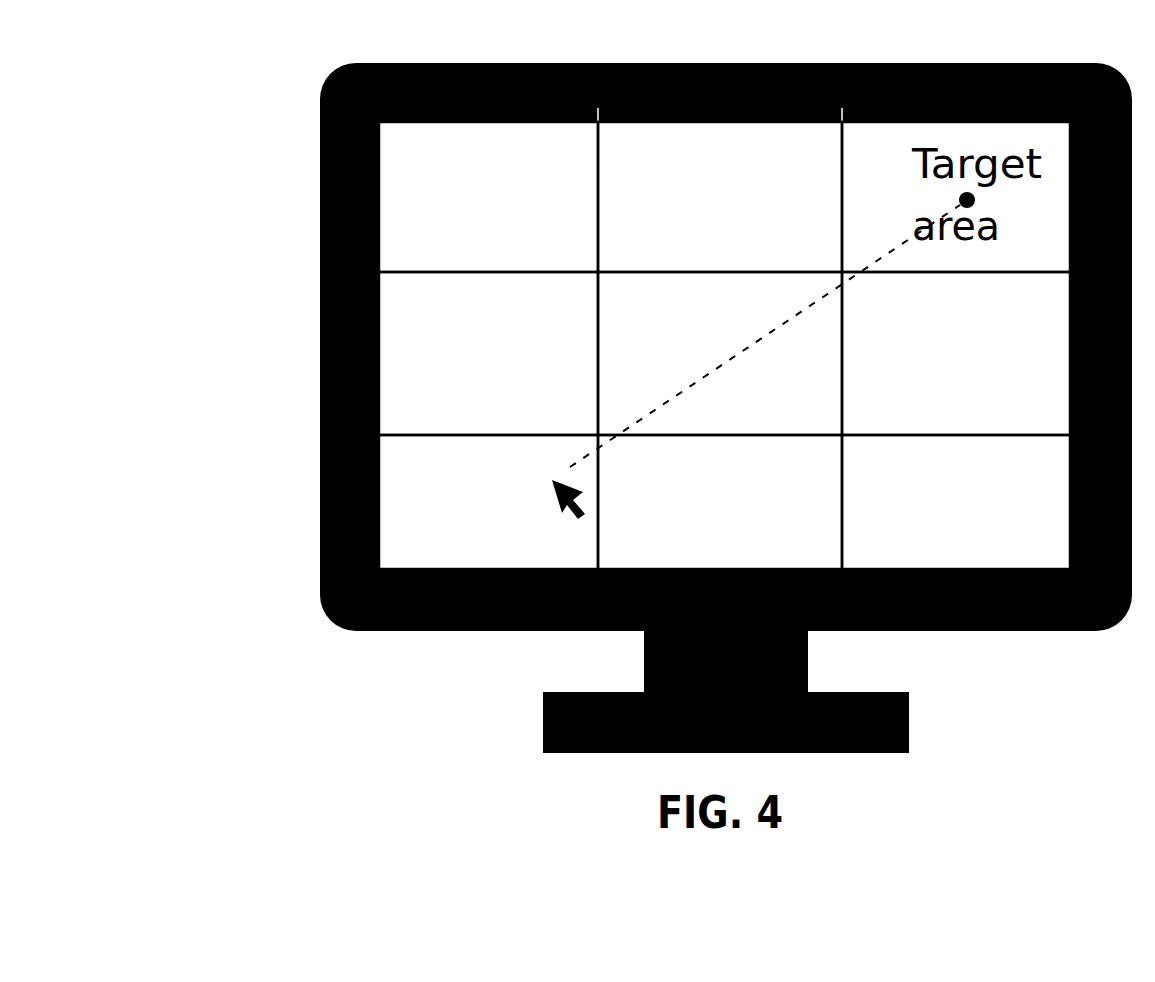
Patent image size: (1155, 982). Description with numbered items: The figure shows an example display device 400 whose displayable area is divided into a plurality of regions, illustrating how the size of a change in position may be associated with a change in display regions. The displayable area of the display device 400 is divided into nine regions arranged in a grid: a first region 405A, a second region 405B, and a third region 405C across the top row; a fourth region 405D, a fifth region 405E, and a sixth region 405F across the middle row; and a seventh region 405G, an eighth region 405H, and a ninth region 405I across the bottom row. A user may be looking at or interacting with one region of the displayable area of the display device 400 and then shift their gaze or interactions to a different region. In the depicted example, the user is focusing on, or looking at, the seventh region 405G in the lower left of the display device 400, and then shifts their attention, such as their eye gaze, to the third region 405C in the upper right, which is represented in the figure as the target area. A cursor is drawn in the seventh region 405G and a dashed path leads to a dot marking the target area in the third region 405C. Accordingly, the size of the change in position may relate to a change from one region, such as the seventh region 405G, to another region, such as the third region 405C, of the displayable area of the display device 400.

The display device 400 is at (305, 71).
The first region 405A is at (500, 206).
The second region 405B is at (718, 198).
The third region 405C is at (905, 204).
The fourth region 405D is at (473, 330).
The fifth region 405E is at (677, 330).
The sixth region 405F is at (963, 356).
The seventh region 405G is at (460, 482).
The eighth region 405H is at (727, 512).
The ninth region 405I is at (967, 506).